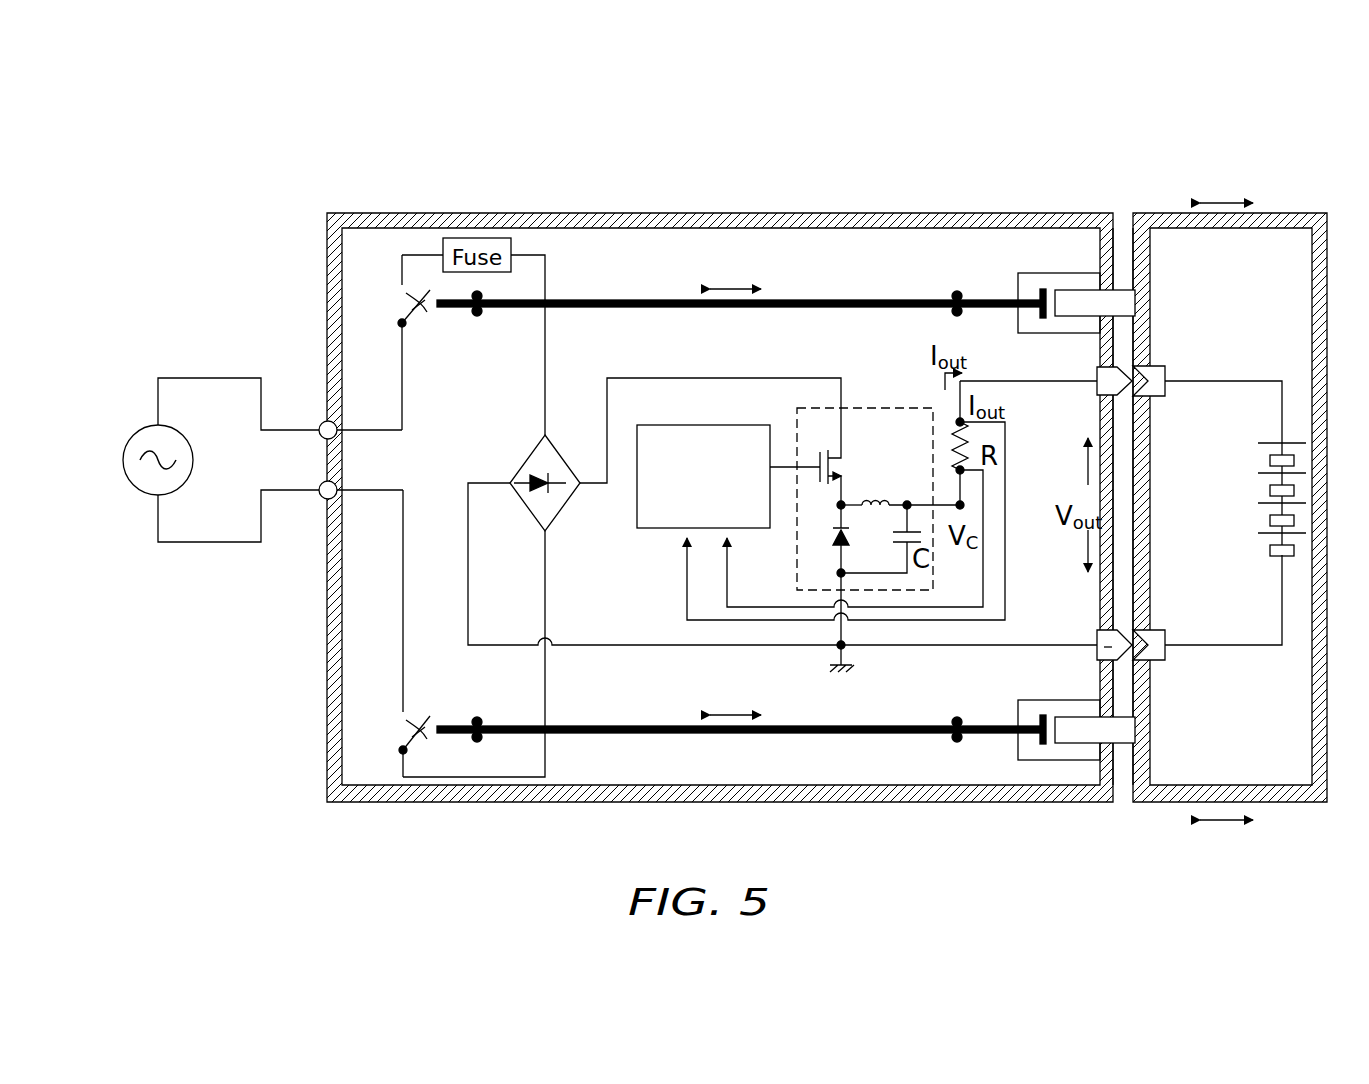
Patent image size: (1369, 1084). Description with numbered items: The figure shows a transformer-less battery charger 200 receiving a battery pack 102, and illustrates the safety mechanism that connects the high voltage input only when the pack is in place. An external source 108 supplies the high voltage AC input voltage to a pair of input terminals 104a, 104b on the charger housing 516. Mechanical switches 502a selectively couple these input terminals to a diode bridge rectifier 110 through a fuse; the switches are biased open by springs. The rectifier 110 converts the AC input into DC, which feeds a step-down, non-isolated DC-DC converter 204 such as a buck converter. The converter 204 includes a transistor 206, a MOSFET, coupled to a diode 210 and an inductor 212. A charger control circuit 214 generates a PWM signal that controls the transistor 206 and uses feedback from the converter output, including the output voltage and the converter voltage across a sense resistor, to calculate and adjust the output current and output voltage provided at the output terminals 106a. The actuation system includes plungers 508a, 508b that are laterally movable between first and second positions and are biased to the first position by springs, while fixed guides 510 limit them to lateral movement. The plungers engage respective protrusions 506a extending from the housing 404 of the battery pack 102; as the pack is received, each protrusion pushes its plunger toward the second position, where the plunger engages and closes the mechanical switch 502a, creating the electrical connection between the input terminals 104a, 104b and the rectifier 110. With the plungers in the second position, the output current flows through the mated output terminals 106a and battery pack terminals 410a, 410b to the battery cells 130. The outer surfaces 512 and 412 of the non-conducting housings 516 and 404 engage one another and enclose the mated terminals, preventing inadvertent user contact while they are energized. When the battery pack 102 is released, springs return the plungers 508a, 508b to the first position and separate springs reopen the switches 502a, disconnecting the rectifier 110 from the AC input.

The battery charger 200 is at (558, 183).
The battery pack 102 is at (1234, 163).
The charger housing 516 is at (787, 213).
The outer surface of charger housing 512 is at (1113, 213).
The outer surface of battery pack housing 412 is at (1133, 213).
The battery pack housing 404 is at (1262, 213).
The first plunger 508a is at (800, 300).
The second plunger 508b is at (800, 734).
The fixed guides 510 is at (482, 294).
The protrusion 506a is at (1125, 305).
The mechanical switch 502a is at (420, 318).
The first input terminal 104a is at (365, 410).
The second input terminal 104b is at (337, 496).
The external source 108 is at (138, 428).
The diode bridge rectifier 110 is at (530, 455).
The charger control circuit 214 is at (718, 425).
The non-isolated DC-DC converter 204 is at (855, 408).
The transistor 206 is at (830, 468).
The inductor 212 is at (866, 497).
The diode 210 is at (846, 537).
The output terminal 106a is at (1100, 368).
The positive battery pack terminal 410a is at (1165, 392).
The negative battery pack terminal 410b is at (1165, 632).
The battery cells 130 is at (1257, 433).